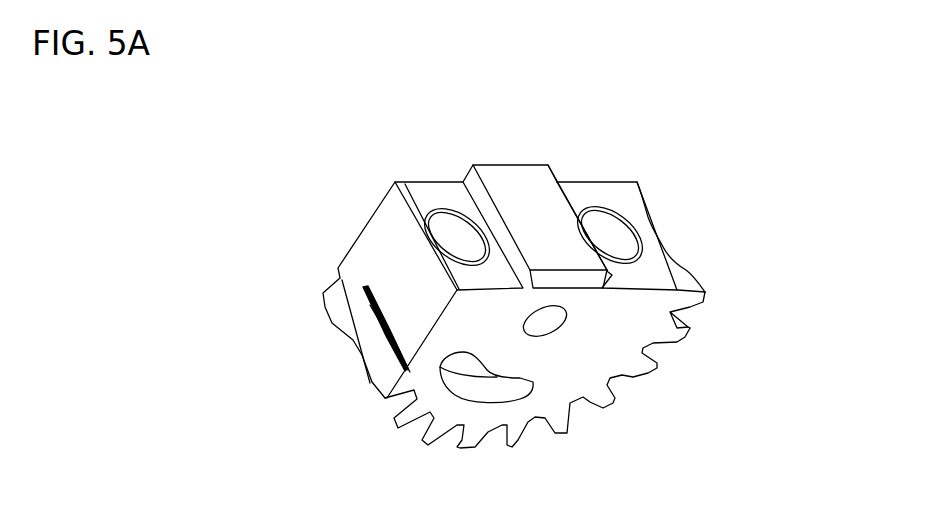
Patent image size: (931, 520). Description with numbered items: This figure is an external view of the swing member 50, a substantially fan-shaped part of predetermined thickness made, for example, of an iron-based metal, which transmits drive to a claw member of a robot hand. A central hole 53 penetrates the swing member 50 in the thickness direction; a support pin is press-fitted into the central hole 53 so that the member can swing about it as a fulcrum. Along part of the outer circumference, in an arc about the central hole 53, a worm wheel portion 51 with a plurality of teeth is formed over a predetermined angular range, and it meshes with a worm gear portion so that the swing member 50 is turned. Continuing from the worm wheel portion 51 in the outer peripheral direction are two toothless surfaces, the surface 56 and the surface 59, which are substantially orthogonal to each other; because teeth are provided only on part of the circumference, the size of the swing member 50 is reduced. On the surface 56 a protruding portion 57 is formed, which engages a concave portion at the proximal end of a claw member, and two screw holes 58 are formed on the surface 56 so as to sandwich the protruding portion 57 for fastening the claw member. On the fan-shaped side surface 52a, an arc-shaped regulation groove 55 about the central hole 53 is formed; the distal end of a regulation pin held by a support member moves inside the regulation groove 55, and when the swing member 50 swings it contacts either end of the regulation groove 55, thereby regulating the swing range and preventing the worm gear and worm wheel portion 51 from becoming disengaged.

The swing member 50 is at (599, 147).
The worm wheel portion 51 is at (563, 417).
The side surface 52a is at (618, 327).
The central hole 53 is at (547, 318).
The regulation groove 55 is at (490, 393).
The surface 56 is at (624, 195).
The protruding portion 57 is at (515, 178).
The screw holes 58 is at (452, 227).
The surface 59 is at (398, 275).